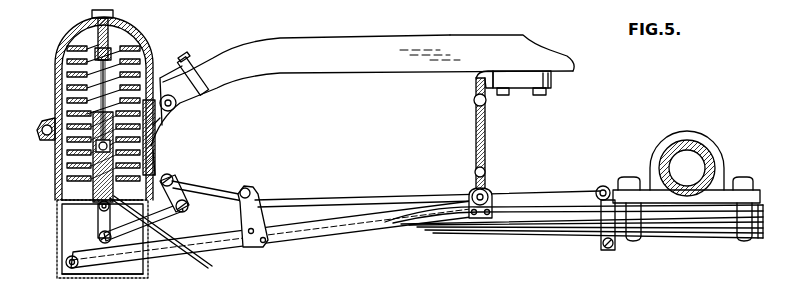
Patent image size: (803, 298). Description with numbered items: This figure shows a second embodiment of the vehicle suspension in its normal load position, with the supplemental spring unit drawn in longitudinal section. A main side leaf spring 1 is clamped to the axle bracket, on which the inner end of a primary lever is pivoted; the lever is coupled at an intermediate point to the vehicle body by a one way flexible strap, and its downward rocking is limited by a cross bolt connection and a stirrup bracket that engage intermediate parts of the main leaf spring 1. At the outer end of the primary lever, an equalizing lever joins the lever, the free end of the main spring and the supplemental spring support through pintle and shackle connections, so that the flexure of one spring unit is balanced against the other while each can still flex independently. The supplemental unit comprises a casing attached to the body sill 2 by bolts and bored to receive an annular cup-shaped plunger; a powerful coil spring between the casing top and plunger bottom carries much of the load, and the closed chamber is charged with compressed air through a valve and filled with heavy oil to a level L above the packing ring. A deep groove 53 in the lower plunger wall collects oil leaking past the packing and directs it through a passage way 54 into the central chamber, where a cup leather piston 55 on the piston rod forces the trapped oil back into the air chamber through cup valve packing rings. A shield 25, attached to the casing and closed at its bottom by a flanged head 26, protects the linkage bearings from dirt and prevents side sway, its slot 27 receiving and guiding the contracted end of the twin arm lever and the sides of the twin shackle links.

The main side leaf spring 1 is at (547, 227).
The body sill 2 is at (244, 50).
The shield 25 is at (62, 241).
The flanged head 26 is at (124, 278).
The slot 27 is at (150, 270).
The deep groove 53 is at (60, 160).
The passage way 54 is at (137, 243).
The cup leather piston 55 is at (153, 136).
The oil level L is at (155, 95).